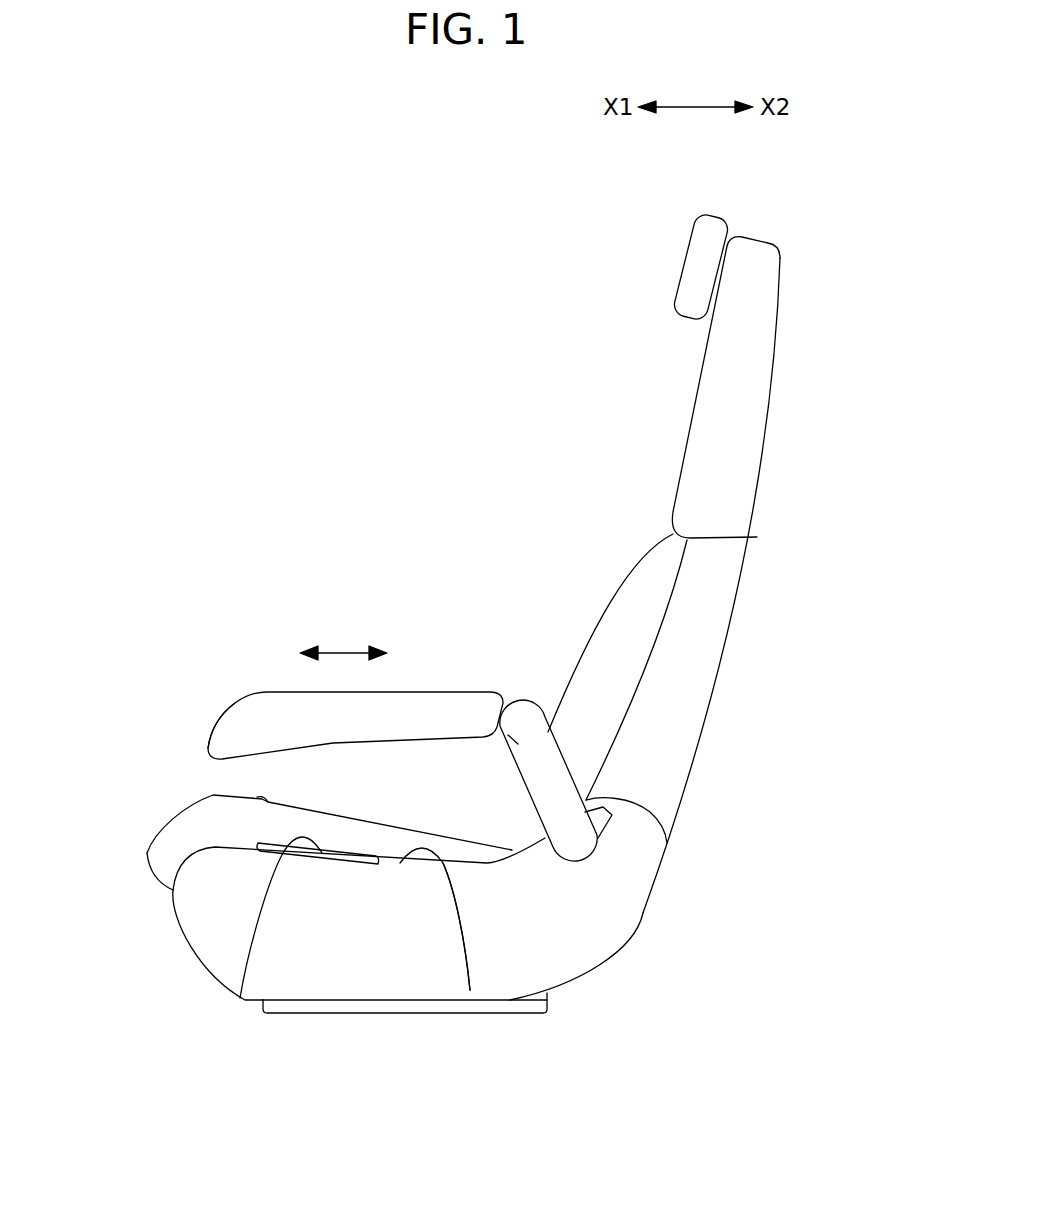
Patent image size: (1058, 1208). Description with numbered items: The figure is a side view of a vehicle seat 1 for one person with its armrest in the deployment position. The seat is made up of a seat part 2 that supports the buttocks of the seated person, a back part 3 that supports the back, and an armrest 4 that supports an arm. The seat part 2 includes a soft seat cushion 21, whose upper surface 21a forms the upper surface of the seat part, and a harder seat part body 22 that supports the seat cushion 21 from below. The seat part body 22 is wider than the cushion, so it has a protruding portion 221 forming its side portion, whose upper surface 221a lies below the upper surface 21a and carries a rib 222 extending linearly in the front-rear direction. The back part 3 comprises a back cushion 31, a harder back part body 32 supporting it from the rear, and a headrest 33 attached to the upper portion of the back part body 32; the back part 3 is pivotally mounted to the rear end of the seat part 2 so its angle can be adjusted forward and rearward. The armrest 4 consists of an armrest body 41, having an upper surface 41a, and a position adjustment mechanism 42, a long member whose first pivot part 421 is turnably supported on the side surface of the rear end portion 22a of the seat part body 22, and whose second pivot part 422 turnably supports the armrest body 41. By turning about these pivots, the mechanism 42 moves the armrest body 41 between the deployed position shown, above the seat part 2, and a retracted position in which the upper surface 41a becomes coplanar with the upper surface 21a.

The vehicle seat 1 is at (352, 305).
The seat part 2 is at (60, 840).
The seat cushion 21 is at (163, 858).
The upper surface of seat cushion 21a is at (268, 797).
The seat part body 22 is at (198, 940).
The rear end portion of seat part body 22a is at (647, 865).
The protruding portion 221 is at (380, 930).
The upper surface of protruding portion 221a is at (470, 990).
The rib 222 is at (240, 1000).
The back part 3 is at (887, 370).
The back cushion 31 is at (655, 578).
The back part body 32 is at (733, 552).
The headrest 33 is at (703, 297).
The armrest 4 is at (520, 593).
The armrest body 41 is at (436, 677).
The upper surface of armrest body 41a is at (265, 690).
The position adjustment mechanism 42 is at (523, 692).
The first pivot part 421 is at (578, 845).
The second pivot part 422 is at (515, 737).